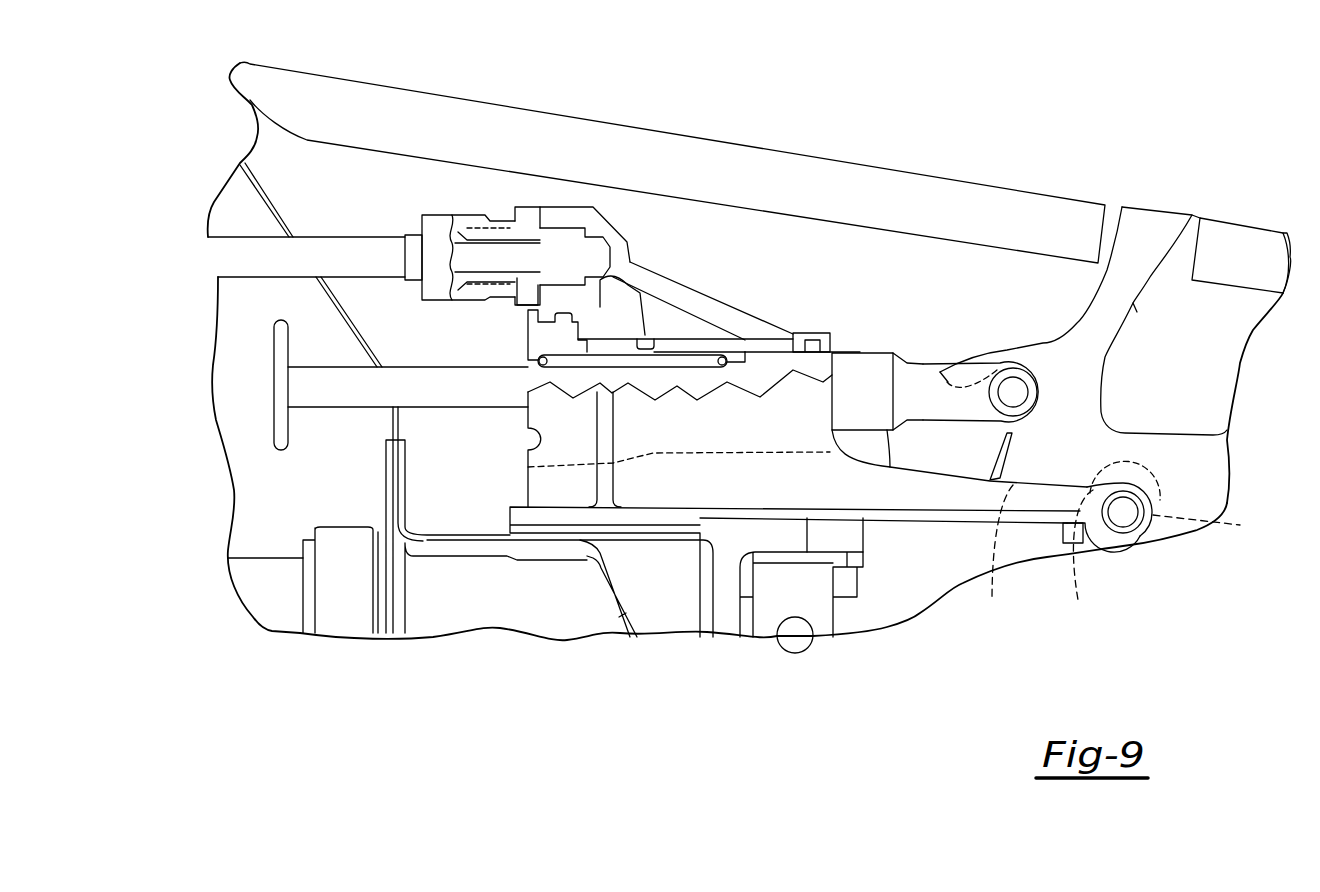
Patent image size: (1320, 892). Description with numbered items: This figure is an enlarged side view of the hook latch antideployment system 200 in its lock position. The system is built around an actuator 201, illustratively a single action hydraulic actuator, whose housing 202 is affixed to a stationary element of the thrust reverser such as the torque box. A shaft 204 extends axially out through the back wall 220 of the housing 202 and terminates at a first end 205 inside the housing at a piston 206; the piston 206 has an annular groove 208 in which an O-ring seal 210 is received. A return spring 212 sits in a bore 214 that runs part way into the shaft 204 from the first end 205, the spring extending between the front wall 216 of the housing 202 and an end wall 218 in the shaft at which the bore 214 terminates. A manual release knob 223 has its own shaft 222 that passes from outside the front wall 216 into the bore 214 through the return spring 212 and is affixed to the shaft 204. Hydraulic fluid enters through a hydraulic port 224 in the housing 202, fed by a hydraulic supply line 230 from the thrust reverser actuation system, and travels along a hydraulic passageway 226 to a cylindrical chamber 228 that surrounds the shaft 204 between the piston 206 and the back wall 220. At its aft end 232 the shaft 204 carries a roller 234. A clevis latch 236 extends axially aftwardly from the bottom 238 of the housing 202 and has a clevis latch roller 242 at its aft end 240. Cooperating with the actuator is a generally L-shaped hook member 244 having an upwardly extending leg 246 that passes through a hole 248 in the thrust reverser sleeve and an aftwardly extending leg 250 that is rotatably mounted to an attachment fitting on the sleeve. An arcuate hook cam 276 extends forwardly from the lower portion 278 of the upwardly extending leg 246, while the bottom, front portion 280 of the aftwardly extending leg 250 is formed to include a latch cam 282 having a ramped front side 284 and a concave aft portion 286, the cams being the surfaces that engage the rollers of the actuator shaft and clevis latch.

The hook latch antideployment system 200 is at (830, 272).
The actuator 201 is at (878, 331).
The housing 202 is at (612, 232).
The shaft 204 is at (900, 440).
The first end 205 is at (618, 278).
The piston 206 is at (671, 326).
The annular groove 208 is at (675, 318).
The O-ring seal 210 is at (643, 338).
The return spring 212 is at (513, 366).
The bore 214 is at (695, 357).
The front wall 216 is at (533, 441).
The end wall 218 is at (720, 357).
The back wall 220 is at (895, 342).
The shaft 222 is at (323, 410).
The manual release knob 223 is at (274, 332).
The hydraulic port 224 is at (527, 240).
The hydraulic passageway 226 is at (620, 371).
The cylindrical chamber 228 is at (700, 339).
The hydraulic supply line 230 is at (318, 222).
The aft end 232 is at (1017, 362).
The roller 234 is at (1020, 447).
The clevis latch 236 is at (957, 548).
The bottom 238 is at (618, 505).
The aft end 240 is at (1143, 523).
The clevis latch roller 242 is at (1120, 548).
The hook member 244 is at (1133, 192).
The upwardly extending leg 246 is at (1133, 305).
The hole 248 is at (1198, 222).
The aftwardly extending leg 250 is at (1157, 433).
The arcuate hook cam 276 is at (958, 361).
The lower portion 278 is at (1059, 351).
The bottom, front portion 280 is at (1055, 483).
The latch cam 282 is at (1083, 560).
The ramped front side 284 is at (989, 558).
The concave aft portion 286 is at (1215, 524).